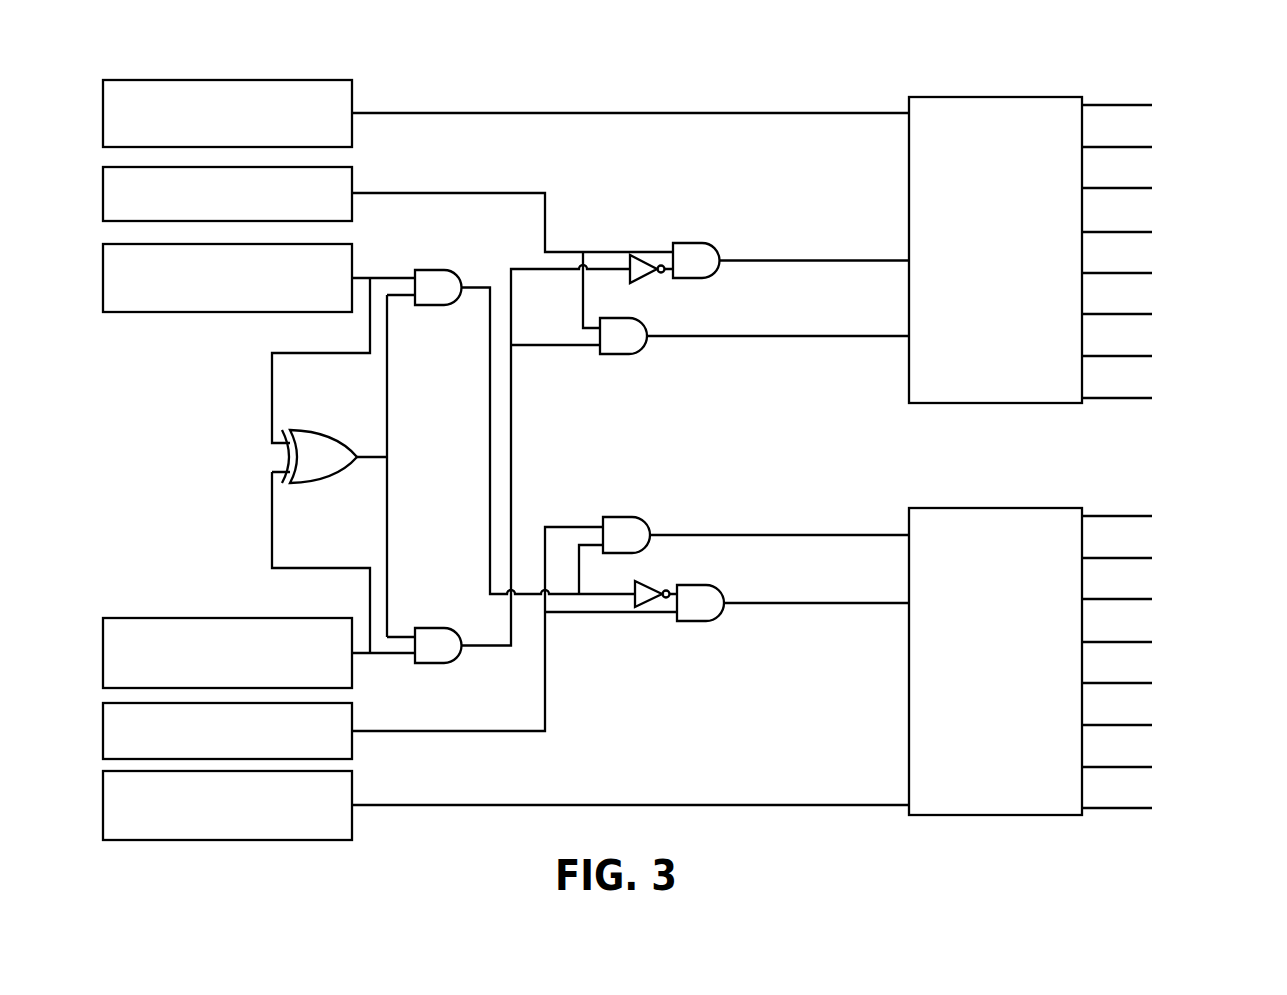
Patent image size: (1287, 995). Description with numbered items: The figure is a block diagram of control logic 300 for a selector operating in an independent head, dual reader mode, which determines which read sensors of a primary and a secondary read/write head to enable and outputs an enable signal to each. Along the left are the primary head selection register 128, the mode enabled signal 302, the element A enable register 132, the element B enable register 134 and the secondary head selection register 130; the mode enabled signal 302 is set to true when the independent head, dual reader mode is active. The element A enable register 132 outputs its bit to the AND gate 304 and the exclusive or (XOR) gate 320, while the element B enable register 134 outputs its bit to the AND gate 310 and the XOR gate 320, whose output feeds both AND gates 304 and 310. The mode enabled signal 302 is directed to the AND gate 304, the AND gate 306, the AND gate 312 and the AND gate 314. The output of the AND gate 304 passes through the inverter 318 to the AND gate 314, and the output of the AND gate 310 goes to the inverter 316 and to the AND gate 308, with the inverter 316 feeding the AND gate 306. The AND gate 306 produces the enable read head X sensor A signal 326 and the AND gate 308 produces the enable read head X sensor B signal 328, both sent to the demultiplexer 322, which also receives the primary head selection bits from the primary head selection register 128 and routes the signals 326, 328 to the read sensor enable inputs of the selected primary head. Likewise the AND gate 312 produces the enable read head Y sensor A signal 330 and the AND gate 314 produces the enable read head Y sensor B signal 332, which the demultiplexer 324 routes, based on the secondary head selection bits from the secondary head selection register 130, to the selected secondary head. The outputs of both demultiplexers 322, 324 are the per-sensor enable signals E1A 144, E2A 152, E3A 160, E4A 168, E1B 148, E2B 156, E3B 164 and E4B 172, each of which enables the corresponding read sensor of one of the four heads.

The control logic for a selector 300 is at (663, 427).
The primary head selection register 128 is at (227, 113).
The mode enabled signal 302 is at (227, 463).
The element A enable register 132 is at (227, 278).
The element B enable register 134 is at (227, 653).
The secondary head selection register 130 is at (227, 805).
The AND gate 304 is at (438, 269).
The AND gate 310 is at (440, 628).
The exclusive or (XOR) gate 320 is at (322, 432).
The AND gate 306 is at (700, 243).
The AND gate 308 is at (628, 356).
The AND gate 312 is at (620, 517).
The AND gate 314 is at (705, 621).
The inverter 316 is at (643, 285).
The inverter 318 is at (648, 583).
The enable read head X sensor A (EXA) signal 326 is at (818, 238).
The enable read head X sensor B (EXB) signal 328 is at (806, 320).
The enable read head Y sensor A (EYA) signal 330 is at (826, 503).
The enable read head Y sensor B (EYB) signal 332 is at (812, 586).
The demultiplexer 322 is at (995, 250).
The demultiplexer 324 is at (995, 661).
The enable signal E1A 144 is at (1200, 517).
The enable signal E2A 152 is at (1200, 559).
The enable signal E3A 160 is at (1200, 600).
The enable signal E4A 168 is at (1200, 643).
The enable signal E1B 148 is at (1200, 684).
The enable signal E2B 156 is at (1200, 723).
The enable signal E3B 164 is at (1200, 768).
The enable signal E4B 172 is at (1168, 605).